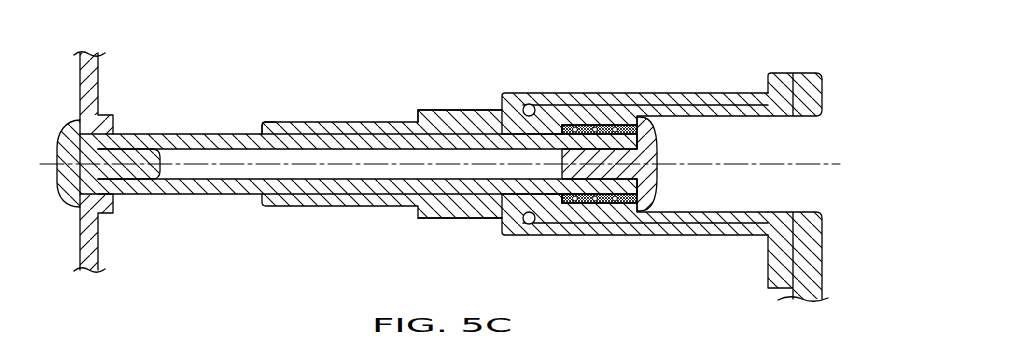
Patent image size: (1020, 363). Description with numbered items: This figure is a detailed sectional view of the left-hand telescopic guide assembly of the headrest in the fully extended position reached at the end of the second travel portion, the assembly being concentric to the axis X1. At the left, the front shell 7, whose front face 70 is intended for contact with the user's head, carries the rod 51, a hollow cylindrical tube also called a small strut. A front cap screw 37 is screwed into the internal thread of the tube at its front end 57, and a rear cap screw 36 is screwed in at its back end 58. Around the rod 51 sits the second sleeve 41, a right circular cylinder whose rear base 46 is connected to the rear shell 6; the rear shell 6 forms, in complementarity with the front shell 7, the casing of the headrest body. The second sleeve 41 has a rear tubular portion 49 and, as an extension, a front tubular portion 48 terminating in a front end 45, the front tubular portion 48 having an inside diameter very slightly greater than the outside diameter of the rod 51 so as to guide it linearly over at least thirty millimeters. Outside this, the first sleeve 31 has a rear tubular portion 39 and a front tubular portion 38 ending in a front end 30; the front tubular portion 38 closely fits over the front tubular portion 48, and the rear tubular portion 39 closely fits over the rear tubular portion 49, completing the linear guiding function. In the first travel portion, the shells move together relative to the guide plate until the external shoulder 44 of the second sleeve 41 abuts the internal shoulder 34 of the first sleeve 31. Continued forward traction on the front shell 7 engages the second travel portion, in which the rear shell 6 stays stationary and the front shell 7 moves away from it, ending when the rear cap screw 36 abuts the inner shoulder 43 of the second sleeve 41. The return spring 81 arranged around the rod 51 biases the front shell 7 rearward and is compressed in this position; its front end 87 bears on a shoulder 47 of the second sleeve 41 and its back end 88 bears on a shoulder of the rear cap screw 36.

The front shell 7 is at (112, 181).
The front face 70 is at (86, 236).
The front cap screw 37 is at (73, 132).
The front end 57 is at (112, 130).
The rod 51 is at (203, 130).
The second sleeve 41 is at (352, 120).
The front end 45 is at (262, 128).
The first sleeve 31 is at (457, 108).
The front end 30 is at (413, 120).
The front tubular portion 48 is at (328, 204).
The front tubular portion 38 is at (453, 213).
The rear tubular portion 39 is at (681, 96).
The rear tubular portion 49 is at (729, 108).
The shoulder 47 is at (555, 128).
The internal shoulder 34 is at (524, 107).
The external shoulder 44 is at (550, 132).
The front end 87 is at (566, 204).
The back end 58 is at (617, 130).
The return spring 81 is at (595, 203).
The inner shoulder 43 is at (630, 140).
The back end 88 is at (632, 203).
The rear cap screw 36 is at (658, 172).
The rear shell 6 is at (801, 71).
The rear base 46 is at (777, 276).
The axis X1 is at (735, 162).